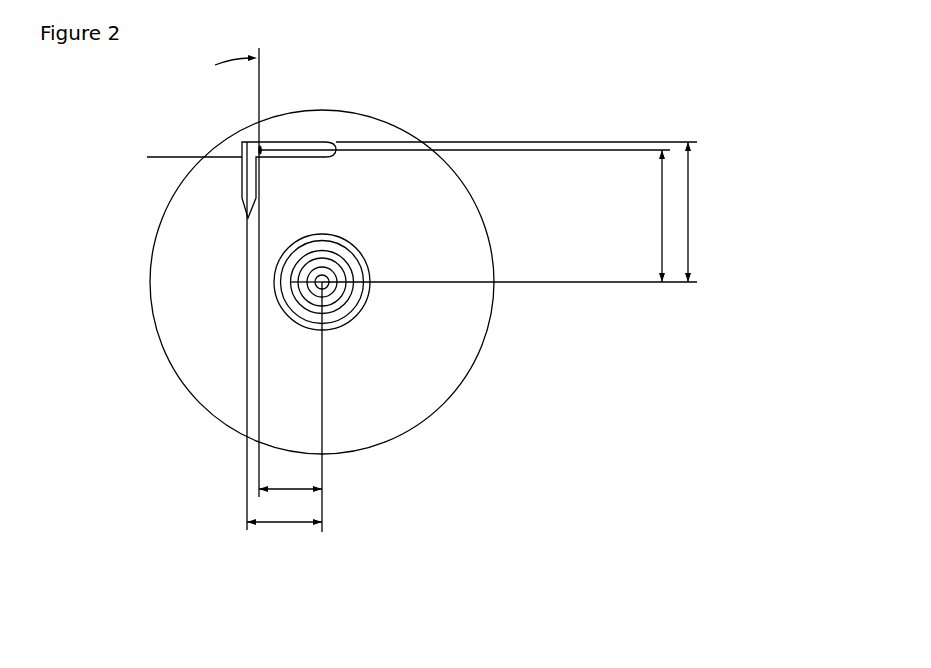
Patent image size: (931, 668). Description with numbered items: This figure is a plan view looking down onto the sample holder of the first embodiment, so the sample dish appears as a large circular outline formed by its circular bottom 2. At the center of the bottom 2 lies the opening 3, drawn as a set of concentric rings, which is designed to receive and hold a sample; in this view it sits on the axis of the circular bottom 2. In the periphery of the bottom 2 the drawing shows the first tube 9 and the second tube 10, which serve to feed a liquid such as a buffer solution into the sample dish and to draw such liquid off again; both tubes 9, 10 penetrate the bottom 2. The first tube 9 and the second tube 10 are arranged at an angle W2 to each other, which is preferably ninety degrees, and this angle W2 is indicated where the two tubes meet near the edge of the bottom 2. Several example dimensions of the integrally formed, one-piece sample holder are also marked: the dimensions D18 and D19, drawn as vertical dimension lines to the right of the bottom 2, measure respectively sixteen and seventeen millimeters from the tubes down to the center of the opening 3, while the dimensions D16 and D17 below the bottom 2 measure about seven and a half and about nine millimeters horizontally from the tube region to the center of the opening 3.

The circular bottom 2 is at (172, 181).
The opening 3 is at (370, 283).
The first tube 9 is at (297, 142).
The second tube 10 is at (249, 178).
The angle W2 is at (156, 150).
The dimension D16 is at (295, 490).
The dimension D17 is at (272, 522).
The dimension D18 is at (662, 200).
The dimension D19 is at (688, 243).